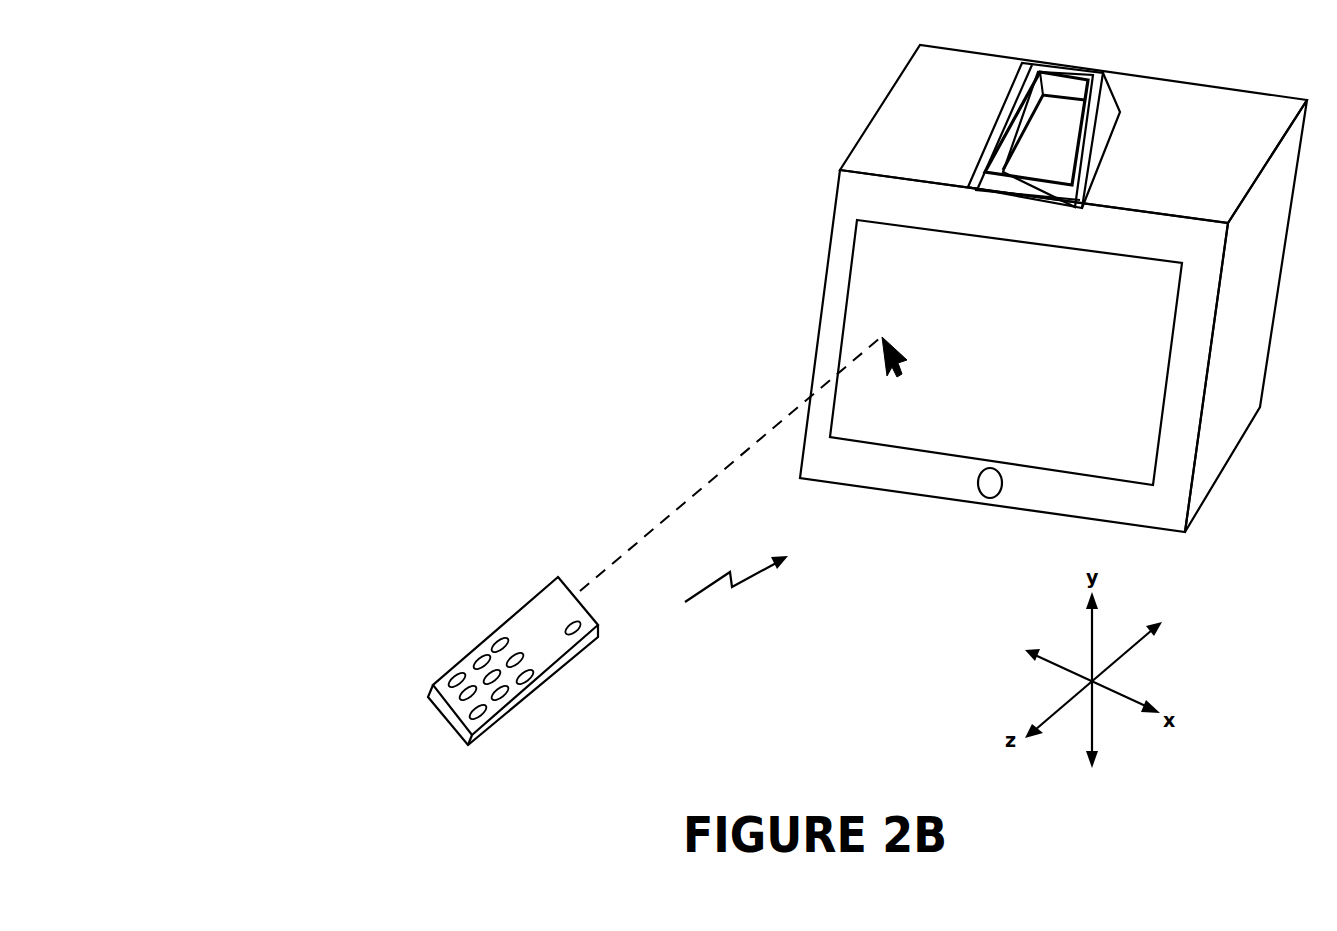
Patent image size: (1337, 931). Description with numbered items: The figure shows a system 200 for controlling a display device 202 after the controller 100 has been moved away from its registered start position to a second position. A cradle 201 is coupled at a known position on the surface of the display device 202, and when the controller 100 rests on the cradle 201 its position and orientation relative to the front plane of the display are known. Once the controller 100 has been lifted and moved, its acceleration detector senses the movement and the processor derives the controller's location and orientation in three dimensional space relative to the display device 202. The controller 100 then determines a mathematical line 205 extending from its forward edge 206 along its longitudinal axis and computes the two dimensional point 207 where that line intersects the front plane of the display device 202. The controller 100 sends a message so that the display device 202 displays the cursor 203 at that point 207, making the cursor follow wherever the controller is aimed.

The controller 100 is at (545, 620).
The system for controlling a display device 200 is at (295, 91).
The cradle 201 is at (1100, 128).
The display device 202 is at (896, 210).
The cursor 203 is at (897, 358).
The mathematical line 205 is at (712, 468).
The forward edge 206 is at (574, 568).
The two dimensional point 207 is at (892, 335).